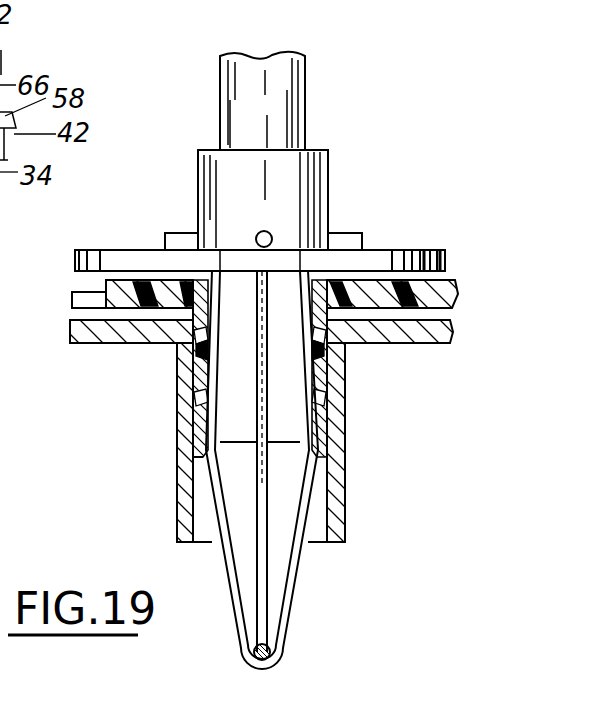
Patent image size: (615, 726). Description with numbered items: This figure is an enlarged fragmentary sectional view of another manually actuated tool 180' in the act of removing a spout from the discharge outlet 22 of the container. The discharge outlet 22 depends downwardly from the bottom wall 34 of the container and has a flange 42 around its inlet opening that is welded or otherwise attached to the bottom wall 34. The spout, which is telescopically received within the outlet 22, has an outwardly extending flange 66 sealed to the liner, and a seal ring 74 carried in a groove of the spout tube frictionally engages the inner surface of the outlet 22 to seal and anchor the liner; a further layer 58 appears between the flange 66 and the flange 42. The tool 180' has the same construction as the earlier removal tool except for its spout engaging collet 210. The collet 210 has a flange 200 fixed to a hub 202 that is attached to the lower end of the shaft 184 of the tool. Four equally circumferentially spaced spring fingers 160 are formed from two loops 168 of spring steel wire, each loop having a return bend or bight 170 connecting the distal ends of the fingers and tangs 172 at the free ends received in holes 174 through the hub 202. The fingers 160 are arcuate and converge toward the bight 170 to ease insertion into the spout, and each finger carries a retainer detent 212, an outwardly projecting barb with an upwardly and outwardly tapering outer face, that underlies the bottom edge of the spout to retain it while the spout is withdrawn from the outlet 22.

The shaft 184 is at (220, 78).
The hub 202 is at (240, 158).
The manually actuated tool 180' is at (365, 47).
The spout engaging collet 210 is at (360, 142).
The flange 200 is at (152, 240).
The tangs 172 is at (178, 232).
The holes 174 is at (268, 232).
The flange 66 is at (104, 280).
The septum layer 58 is at (74, 297).
The flange 42 is at (72, 316).
The bottom wall 34 is at (416, 343).
The discharge outlet 22 is at (346, 476).
The seal ring 74 is at (195, 397).
The retainer detent 212 is at (200, 456).
The loop 168 is at (298, 586).
The spring fingers 160 is at (260, 593).
The bight 170 is at (255, 671).